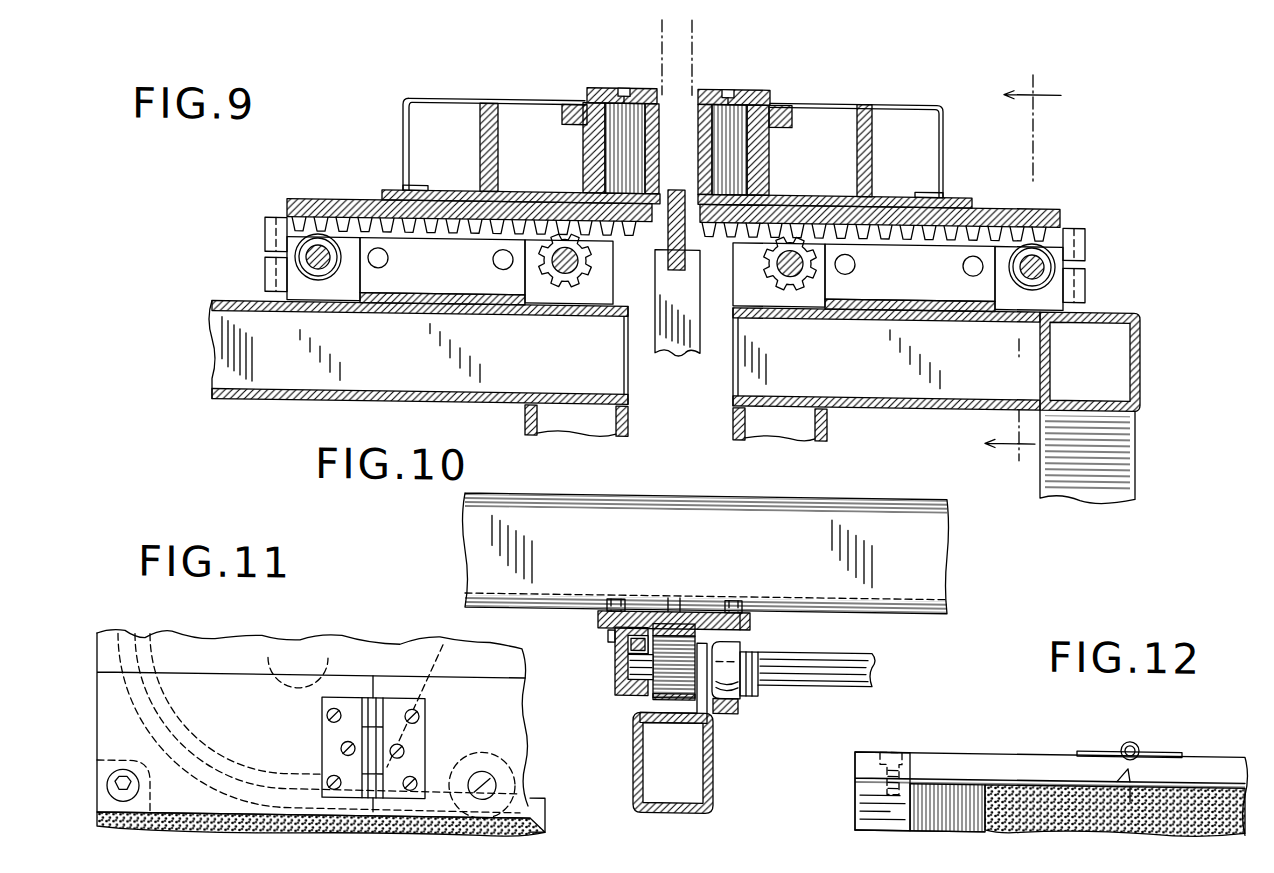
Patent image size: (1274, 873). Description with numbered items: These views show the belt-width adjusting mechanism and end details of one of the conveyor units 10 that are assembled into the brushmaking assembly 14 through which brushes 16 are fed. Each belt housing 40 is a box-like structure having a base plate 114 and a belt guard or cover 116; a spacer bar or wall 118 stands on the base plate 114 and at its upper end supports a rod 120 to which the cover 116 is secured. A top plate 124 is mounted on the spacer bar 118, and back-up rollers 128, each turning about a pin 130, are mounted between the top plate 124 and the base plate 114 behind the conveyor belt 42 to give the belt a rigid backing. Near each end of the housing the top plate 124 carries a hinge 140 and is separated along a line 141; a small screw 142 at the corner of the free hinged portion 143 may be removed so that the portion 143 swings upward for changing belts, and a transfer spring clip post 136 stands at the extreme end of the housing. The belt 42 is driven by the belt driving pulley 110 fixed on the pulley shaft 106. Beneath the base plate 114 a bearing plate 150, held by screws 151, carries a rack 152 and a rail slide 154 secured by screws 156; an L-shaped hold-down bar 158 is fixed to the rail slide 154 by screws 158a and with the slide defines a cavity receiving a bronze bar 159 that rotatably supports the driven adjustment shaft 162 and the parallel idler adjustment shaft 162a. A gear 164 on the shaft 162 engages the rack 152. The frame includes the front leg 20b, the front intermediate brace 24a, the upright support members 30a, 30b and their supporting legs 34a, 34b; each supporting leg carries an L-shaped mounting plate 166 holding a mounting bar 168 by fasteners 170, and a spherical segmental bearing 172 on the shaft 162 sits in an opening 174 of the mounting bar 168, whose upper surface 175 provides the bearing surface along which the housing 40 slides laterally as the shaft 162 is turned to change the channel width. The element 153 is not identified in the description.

In FIG. 9, the conveyor unit 10 is at (1023, 264).
In FIG. 9, the brushmaking assembly 14 is at (703, 83).
In FIG. 9, the brush 16 is at (660, 27).
In FIG. 9, the front leg 20b is at (1138, 445).
In FIG. 9, the front intermediate longitudinally extending brace 24a is at (1141, 360).
In FIG. 9, the front support member 30a is at (827, 433).
In FIG. 9, the rear support member 30b is at (525, 417).
In FIG. 9, the front supporting leg 34a is at (885, 402).
In FIG. 10, the front supporting leg 34a is at (672, 813).
In FIG. 9, the rear supporting leg 34b is at (253, 401).
In FIG. 9, the housing 40 is at (531, 72).
In FIG. 9, the conveyor belt 42 is at (481, 147).
In FIG. 11, the conveyor belt 42 is at (535, 798).
In FIG. 12, the conveyor belt 42 is at (1208, 812).
In FIG. 11, the belt driving pulley shaft 106 is at (308, 645).
In FIG. 11, the belt driving pulley 110 is at (153, 658).
In FIG. 9, the base plate 114 is at (385, 190).
In FIG. 10, the base plate 114 is at (920, 610).
In FIG. 9, the belt guard or cover 116 is at (423, 84).
In FIG. 10, the belt guard or cover 116 is at (927, 547).
In FIG. 9, the spacer bar or wall 118 is at (612, 162).
In FIG. 9, the rod 120 is at (563, 110).
In FIG. 9, the top plate 124 is at (597, 85).
In FIG. 10, the top plate 124 is at (758, 485).
In FIG. 11, the top plate 124 is at (500, 701).
In FIG. 12, the top plate 124 is at (1202, 766).
In FIG. 9, the back-up roller 128 is at (612, 148).
In FIG. 11, the back-up roller 128 is at (496, 747).
In FIG. 9, the pin 130 is at (624, 84).
In FIG. 11, the pin 130 is at (468, 775).
In FIG. 11, the transfer spring clip post 136 is at (100, 752).
In FIG. 12, the transfer spring clip post 136 is at (855, 812).
In FIG. 11, the hinge 140 is at (322, 745).
In FIG. 12, the hinge 140 is at (1103, 746).
In FIG. 11, the line 141 is at (380, 694).
In FIG. 12, the line 141 is at (1120, 762).
In FIG. 9, the small screw 142 is at (690, 352).
In FIG. 11, the small screw 142 is at (122, 803).
In FIG. 12, the small screw 142 is at (888, 752).
In FIG. 11, the free hinged portion 143 is at (188, 802).
In FIG. 12, the free hinged portion 143 is at (1022, 738).
In FIG. 9, the bearing plate 150 is at (342, 187).
In FIG. 10, the bearing plate 150 is at (752, 618).
In FIG. 10, the screws 151 is at (610, 598).
In FIG. 9, the rack 152 is at (460, 236).
In FIG. 10, the rack 152 is at (703, 606).
In FIG. 10, the pin 153 is at (682, 605).
In FIG. 10, the rail slide 154 is at (648, 621).
In FIG. 10, the screws 156 is at (672, 625).
In FIG. 10, the L-shaped hold-down bar 158 is at (615, 678).
In FIG. 10, the screws 158a is at (608, 632).
In FIG. 10, the bar 159 is at (620, 648).
In FIG. 9, the driven adjustment shaft 162 is at (548, 268).
In FIG. 10, the driven adjustment shaft 162 is at (616, 662).
In FIG. 9, the idler adjustment shaft 162a is at (305, 252).
In FIG. 9, the gear 164 is at (522, 304).
In FIG. 10, the gear 164 is at (680, 698).
In FIG. 9, the L-shaped mounting plate 166 is at (461, 285).
In FIG. 10, the L-shaped mounting plate 166 is at (641, 714).
In FIG. 9, the mounting bar 168 is at (265, 224).
In FIG. 10, the mounting bar 168 is at (733, 712).
In FIG. 9, the fasteners 170 is at (378, 268).
In FIG. 9, the spherical segmental bearing 172 is at (317, 280).
In FIG. 10, the spherical segmental bearing 172 is at (758, 690).
In FIG. 9, the opening 174 is at (305, 271).
In FIG. 10, the opening 174 is at (740, 640).
In FIG. 10, the upper surface 175 is at (742, 615).